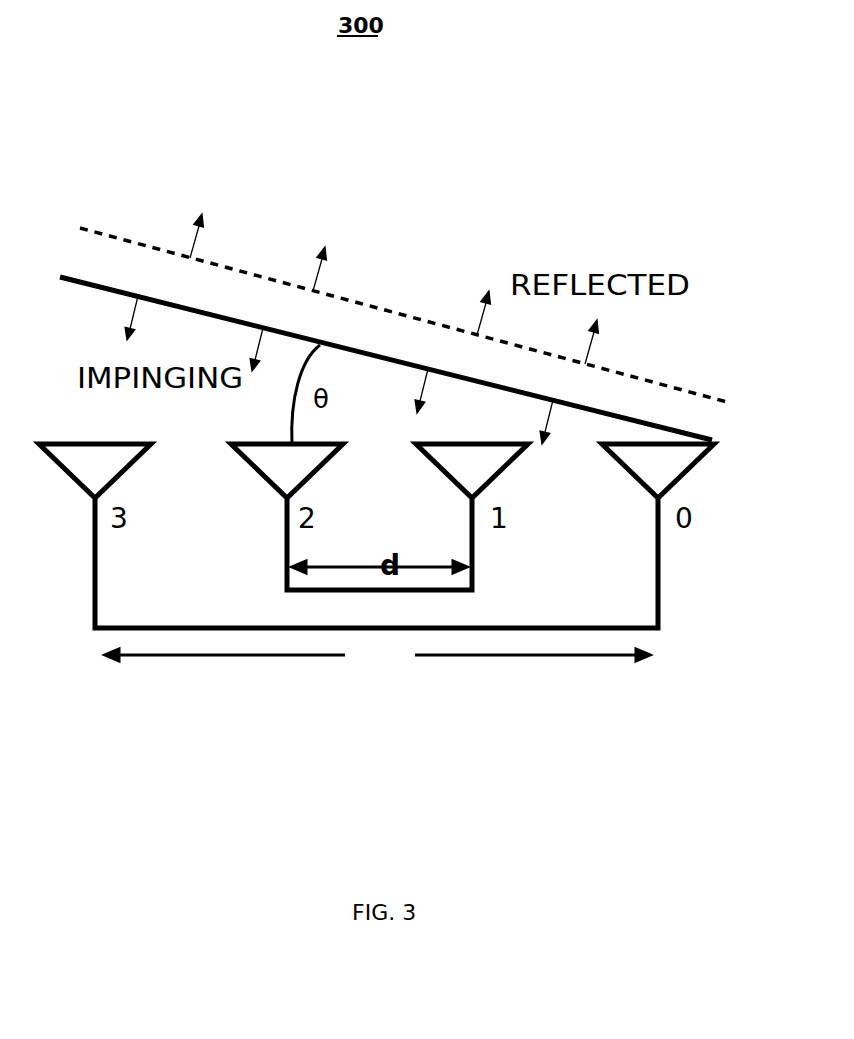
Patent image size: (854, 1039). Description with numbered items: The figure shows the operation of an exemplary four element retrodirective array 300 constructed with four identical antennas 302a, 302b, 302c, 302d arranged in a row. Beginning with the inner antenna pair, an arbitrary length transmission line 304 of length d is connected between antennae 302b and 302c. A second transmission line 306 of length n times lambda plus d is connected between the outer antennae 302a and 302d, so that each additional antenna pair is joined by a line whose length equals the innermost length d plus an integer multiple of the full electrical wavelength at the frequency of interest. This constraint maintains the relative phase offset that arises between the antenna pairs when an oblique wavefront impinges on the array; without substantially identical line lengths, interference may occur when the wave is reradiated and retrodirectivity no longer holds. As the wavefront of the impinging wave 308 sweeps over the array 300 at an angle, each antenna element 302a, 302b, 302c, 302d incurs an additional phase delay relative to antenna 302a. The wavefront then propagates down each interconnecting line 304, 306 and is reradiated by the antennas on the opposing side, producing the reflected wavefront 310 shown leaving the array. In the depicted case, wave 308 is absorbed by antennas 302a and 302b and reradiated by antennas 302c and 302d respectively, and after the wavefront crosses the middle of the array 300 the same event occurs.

The four element retrodirective array 300 is at (478, 673).
The antenna 302a is at (652, 462).
The antenna 302b is at (480, 462).
The antenna 302c is at (278, 473).
The antenna 302d is at (103, 473).
The transmission line 304 is at (393, 590).
The second transmission line 306 is at (215, 630).
The wave 308 is at (60, 277).
The reflected wavefront 310 is at (267, 273).